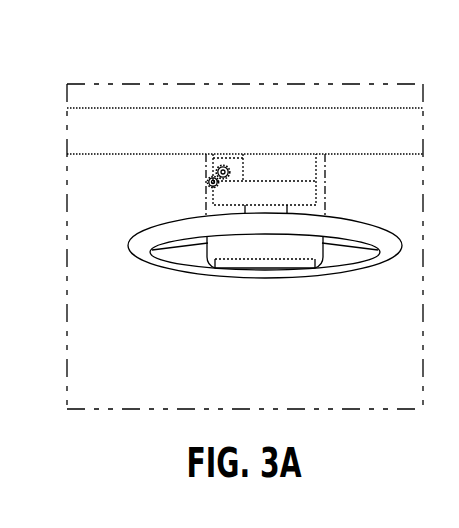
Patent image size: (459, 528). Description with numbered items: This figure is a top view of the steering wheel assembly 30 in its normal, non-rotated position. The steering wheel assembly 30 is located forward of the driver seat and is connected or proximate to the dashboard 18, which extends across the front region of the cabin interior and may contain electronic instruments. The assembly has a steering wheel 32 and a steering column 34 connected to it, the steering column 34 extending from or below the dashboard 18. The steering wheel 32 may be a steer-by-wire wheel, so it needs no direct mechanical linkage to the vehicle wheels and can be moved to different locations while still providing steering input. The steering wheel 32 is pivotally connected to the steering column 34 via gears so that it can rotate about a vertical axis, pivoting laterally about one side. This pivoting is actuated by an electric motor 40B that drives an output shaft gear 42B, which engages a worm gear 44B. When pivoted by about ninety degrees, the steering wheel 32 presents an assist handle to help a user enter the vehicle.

The dashboard 18 is at (288, 118).
The steering wheel assembly 30 is at (150, 215).
The steering wheel 32 is at (147, 265).
The steering column 34 is at (316, 168).
The electric motor 40B is at (237, 161).
The output shaft gear 42B is at (220, 166).
The worm gear 44B is at (207, 183).